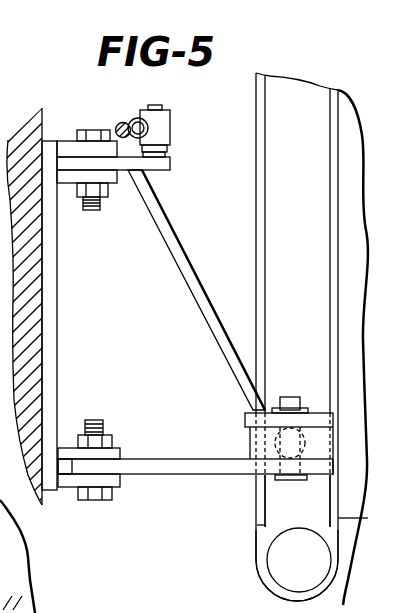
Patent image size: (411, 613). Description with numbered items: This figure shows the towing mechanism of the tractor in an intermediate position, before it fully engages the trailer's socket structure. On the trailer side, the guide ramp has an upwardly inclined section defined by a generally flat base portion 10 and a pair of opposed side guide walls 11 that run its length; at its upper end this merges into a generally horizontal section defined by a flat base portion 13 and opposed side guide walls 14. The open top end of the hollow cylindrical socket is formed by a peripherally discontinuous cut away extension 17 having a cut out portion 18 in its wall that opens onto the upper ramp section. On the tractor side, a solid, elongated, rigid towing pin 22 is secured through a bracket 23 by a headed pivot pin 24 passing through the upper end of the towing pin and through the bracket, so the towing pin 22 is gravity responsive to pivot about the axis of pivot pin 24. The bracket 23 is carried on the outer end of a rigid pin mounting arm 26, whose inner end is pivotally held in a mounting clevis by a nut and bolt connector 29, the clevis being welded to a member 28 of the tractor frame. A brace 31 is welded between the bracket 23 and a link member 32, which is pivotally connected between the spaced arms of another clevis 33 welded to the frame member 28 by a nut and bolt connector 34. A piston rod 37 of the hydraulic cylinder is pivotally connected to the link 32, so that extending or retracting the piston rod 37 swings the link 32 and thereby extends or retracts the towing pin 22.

The flat base portion 10 is at (305, 88).
The side guide walls 11 is at (256, 120).
The flat base portion 13 is at (310, 502).
The side guide walls 14 is at (257, 510).
The cut away extension 17 is at (285, 585).
The cut out portion 18 is at (262, 530).
The towing pin 22 is at (262, 437).
The bracket 23 is at (270, 475).
The headed pivot pin 24 is at (292, 397).
The pin mounting arm 26 is at (152, 470).
The frame member 28 is at (57, 348).
The nut and bolt connector 29 is at (83, 500).
The brace 31 is at (180, 242).
The link member 32 is at (171, 173).
The clevis 33 is at (116, 190).
The nut and bolt connector 34 is at (78, 211).
The piston rod 37 is at (129, 120).